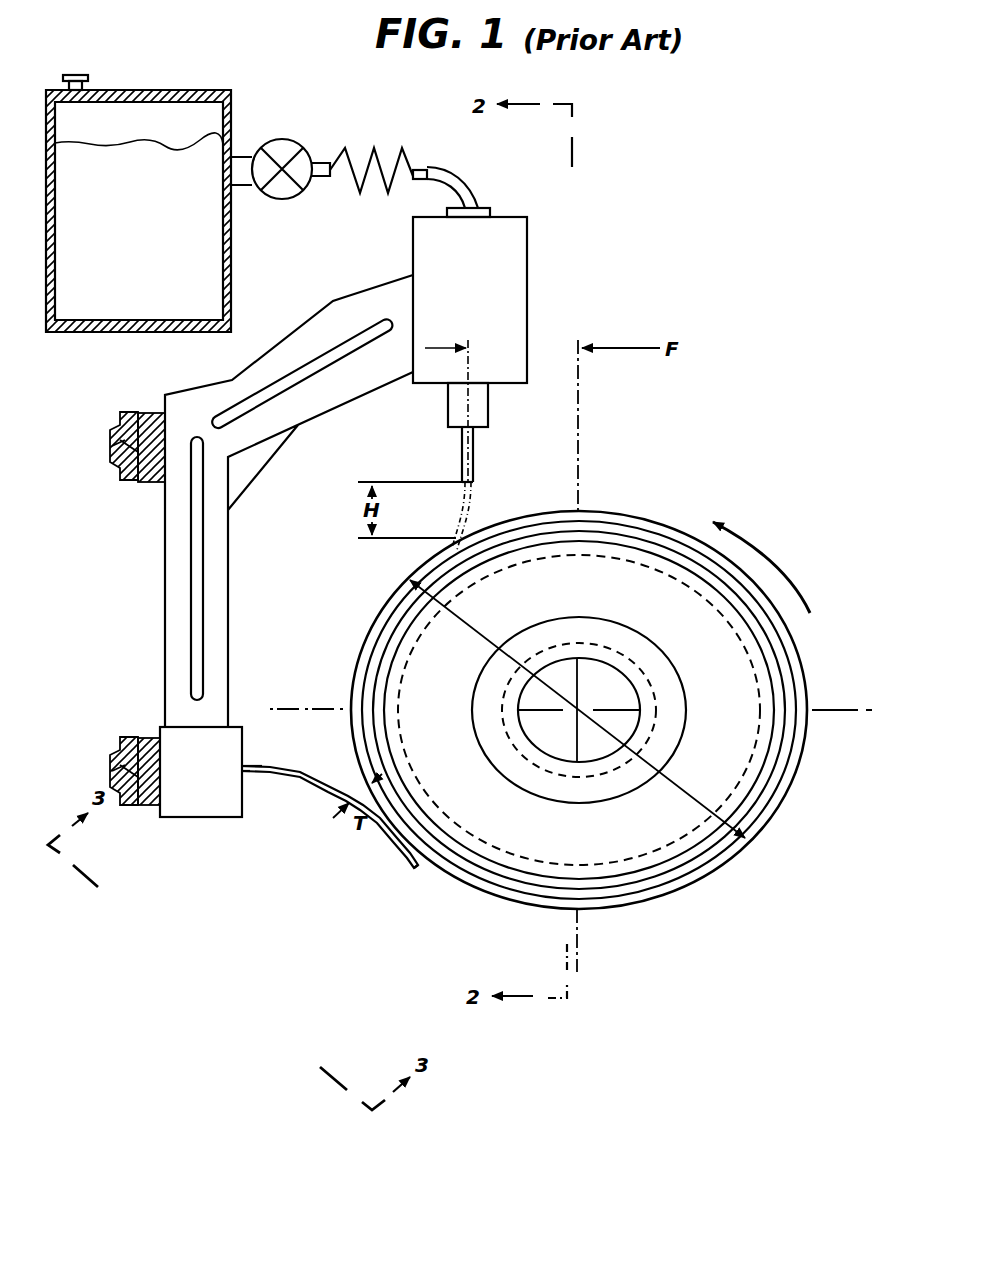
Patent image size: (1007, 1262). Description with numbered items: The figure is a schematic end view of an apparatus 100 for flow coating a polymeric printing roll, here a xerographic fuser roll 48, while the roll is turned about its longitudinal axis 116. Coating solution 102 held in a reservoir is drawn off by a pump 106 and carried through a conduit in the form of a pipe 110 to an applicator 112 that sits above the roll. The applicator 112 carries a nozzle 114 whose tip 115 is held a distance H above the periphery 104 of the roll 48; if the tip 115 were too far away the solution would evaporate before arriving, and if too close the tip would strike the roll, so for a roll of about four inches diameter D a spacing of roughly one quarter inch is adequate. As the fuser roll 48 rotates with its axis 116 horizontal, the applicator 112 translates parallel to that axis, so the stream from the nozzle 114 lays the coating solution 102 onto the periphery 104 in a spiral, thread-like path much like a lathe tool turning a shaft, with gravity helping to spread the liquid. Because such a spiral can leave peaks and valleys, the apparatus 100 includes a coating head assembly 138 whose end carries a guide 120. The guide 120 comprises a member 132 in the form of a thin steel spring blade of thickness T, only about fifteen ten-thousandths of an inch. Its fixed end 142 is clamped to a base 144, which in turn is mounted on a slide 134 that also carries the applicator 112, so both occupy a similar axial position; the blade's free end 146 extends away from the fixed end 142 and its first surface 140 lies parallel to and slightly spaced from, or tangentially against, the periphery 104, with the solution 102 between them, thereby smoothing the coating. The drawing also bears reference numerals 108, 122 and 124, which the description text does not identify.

The apparatus 100 is at (700, 130).
The coating solution 102 is at (112, 282).
The periphery 104 is at (663, 523).
The pump 106 is at (283, 188).
The fluid reservoir tank 108 is at (149, 203).
The pipe 110 is at (442, 170).
The applicator 112 is at (527, 267).
The nozzle 114 is at (483, 453).
The tip 115 is at (474, 484).
The longitudinal axis 116 is at (572, 714).
The guide 120 is at (303, 685).
The center line 122 is at (580, 435).
The rotation direction 124 is at (750, 542).
The blade 132 is at (263, 767).
The slide 134 is at (153, 482).
The coating head assembly 138 is at (134, 589).
The first surface 140 is at (339, 779).
The fixed end 142 is at (243, 775).
The base 144 is at (199, 806).
The free end 146 is at (416, 866).
The fuser roll 48 is at (579, 701).